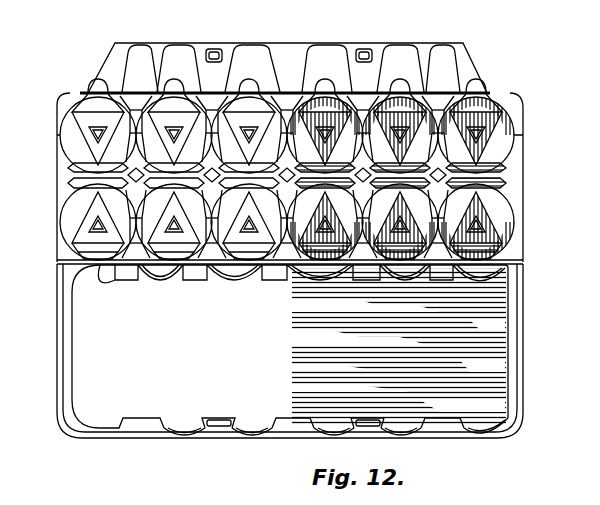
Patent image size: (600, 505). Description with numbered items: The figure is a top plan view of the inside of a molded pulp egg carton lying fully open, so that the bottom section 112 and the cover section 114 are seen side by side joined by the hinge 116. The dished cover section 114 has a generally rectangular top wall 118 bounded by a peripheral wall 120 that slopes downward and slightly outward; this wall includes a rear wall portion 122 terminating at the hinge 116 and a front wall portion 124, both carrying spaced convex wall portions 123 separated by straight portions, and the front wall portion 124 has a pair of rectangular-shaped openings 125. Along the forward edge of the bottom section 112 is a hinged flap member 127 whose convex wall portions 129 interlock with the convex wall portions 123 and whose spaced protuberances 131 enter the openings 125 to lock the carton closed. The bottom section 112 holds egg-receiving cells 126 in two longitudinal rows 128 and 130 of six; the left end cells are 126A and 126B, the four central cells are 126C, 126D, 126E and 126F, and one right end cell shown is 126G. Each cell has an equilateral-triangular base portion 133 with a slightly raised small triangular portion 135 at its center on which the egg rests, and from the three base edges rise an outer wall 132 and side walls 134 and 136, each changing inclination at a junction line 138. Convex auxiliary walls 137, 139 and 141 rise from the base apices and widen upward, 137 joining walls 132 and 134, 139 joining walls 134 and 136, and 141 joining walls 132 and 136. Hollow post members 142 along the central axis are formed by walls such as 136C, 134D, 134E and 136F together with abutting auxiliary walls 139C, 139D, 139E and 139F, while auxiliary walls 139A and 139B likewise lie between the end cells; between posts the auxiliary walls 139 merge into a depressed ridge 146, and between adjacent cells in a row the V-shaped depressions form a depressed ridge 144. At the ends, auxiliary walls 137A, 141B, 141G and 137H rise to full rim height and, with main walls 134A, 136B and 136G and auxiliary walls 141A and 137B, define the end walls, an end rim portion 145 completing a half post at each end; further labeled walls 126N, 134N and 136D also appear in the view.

The bottom section 112 is at (54, 180).
The cover section 114 is at (55, 347).
The hinge 116 is at (72, 270).
The top wall 118 is at (280, 365).
The peripheral wall 120 is at (220, 432).
The rear wall portion 122 is at (417, 302).
The convex wall portions 123 is at (172, 424).
The front wall portion 124 is at (284, 438).
The rectangular-shaped openings 125 is at (216, 418).
The egg-receiving cell 126 is at (232, 90).
The end cell 126A is at (80, 110).
The end cell 126B is at (70, 238).
The centrally disposed cell 126C is at (284, 140).
The centrally disposed cell 126D is at (275, 282).
The centrally disposed cell 126E is at (333, 98).
The centrally disposed cell 126F is at (353, 254).
The end cell 126G is at (513, 116).
The cell 126N is at (497, 216).
The flap member 127 is at (156, 42).
The longitudinal row 128 is at (528, 150).
The convex wall portions 129 is at (174, 62).
The longitudinal row 130 is at (528, 225).
The protuberances 131 is at (214, 48).
The outer wall 132 is at (88, 98).
The base portion 133 is at (85, 128).
The side wall 134 is at (189, 203).
The main cell wall 134A is at (80, 150).
The side wall 134D is at (267, 199).
The side wall 134E is at (308, 142).
The cell facet 134N is at (493, 202).
The small triangular portion 135 is at (94, 135).
The side wall 136 is at (162, 154).
The main cell wall 136B is at (69, 205).
The side wall 136C is at (265, 139).
The cell facet 136D is at (115, 201).
The side wall 136F is at (305, 195).
The main cell wall 136G is at (498, 138).
The auxiliary wall 137 is at (197, 257).
The auxiliary wall 137A is at (66, 118).
The auxiliary wall 137B is at (118, 262).
The auxiliary wall 137H is at (505, 238).
The junction line 138 is at (127, 92).
The auxiliary wall 139 is at (169, 176).
The auxiliary wall 139A is at (93, 168).
The auxiliary wall 139B is at (93, 184).
The auxiliary wall 139C is at (246, 168).
The auxiliary wall 139D is at (246, 184).
The auxiliary wall 139E is at (321, 168).
The auxiliary wall 139F is at (321, 184).
The auxiliary wall 141 is at (198, 108).
The auxiliary wall 141A is at (128, 104).
The auxiliary wall 141B is at (74, 248).
The auxiliary wall 141G is at (500, 106).
The hollow post member 142 is at (175, 176).
The depressed ridge 144 is at (138, 250).
The end rim portion 145 is at (496, 176).
The depressed ridge 146 is at (292, 174).